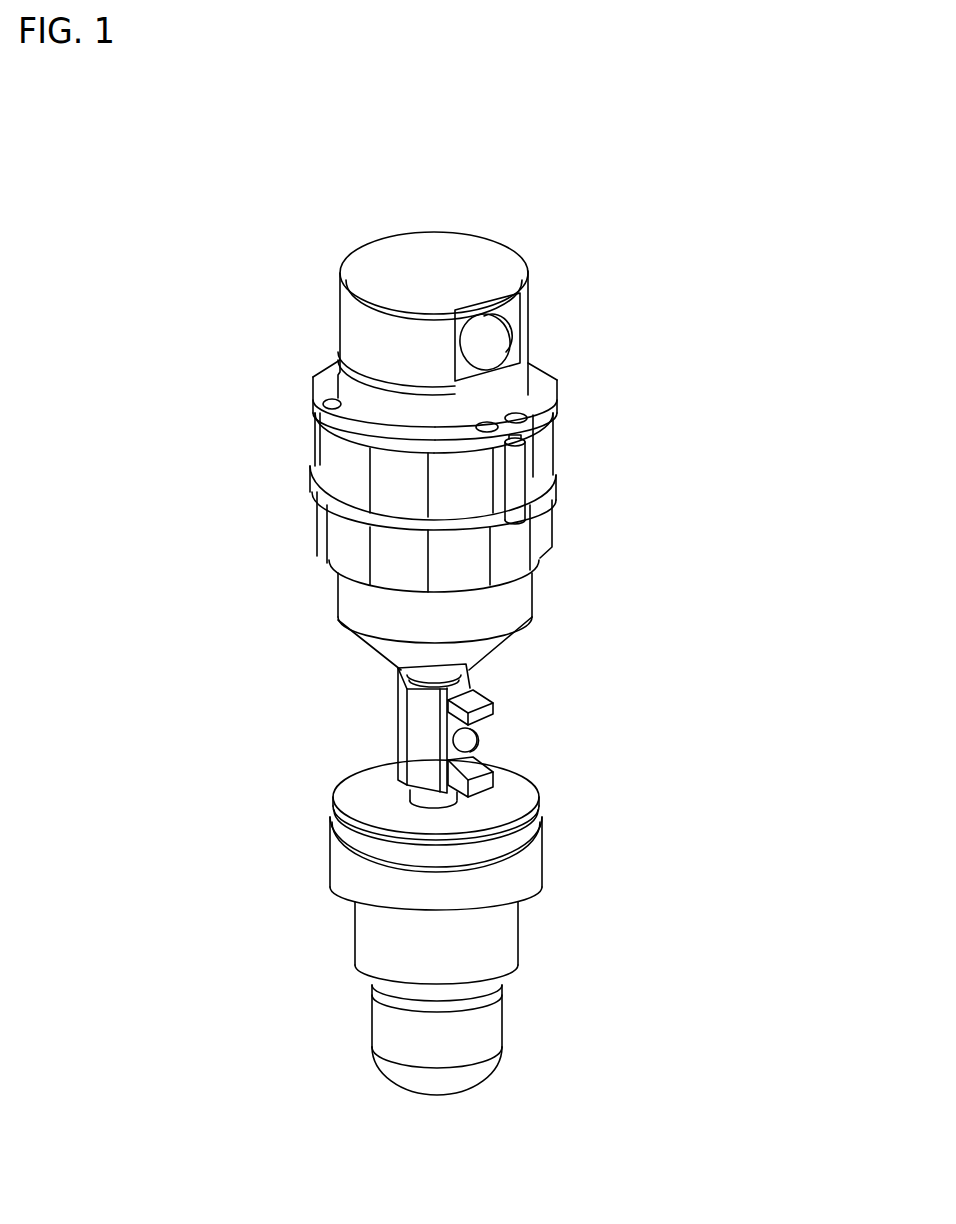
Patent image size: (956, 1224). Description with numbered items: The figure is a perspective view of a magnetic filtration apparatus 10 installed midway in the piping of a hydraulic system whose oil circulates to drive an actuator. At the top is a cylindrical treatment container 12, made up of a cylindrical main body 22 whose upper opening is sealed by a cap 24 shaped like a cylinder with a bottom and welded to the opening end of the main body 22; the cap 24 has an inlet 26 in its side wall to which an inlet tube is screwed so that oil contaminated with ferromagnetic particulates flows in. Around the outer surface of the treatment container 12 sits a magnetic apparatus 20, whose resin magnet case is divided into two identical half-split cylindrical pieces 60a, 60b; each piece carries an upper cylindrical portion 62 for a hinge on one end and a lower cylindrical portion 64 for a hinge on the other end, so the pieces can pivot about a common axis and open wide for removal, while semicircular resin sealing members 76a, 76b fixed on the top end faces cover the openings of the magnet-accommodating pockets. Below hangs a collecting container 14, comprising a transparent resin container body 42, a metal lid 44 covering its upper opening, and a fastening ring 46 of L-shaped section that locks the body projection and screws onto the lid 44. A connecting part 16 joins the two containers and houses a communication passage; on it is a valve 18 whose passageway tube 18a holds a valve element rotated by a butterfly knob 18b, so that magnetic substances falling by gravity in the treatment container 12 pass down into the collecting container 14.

The magnetic filtration apparatus 10 is at (572, 202).
The treatment container 12 is at (332, 588).
The collecting container 14 is at (530, 930).
The connecting part 16 is at (405, 797).
The valve 18 is at (510, 712).
The passageway tube 18a is at (418, 725).
The butterfly knob 18b is at (483, 712).
The magnetic apparatus 20 is at (568, 432).
The main body 22 is at (500, 610).
The cap 24 is at (397, 262).
The inlet 26 is at (507, 333).
The container body 42 is at (378, 933).
The lid 44 is at (503, 803).
The fastening ring 46 is at (527, 868).
The half-split cylindrical piece 60a is at (343, 462).
The half-split cylindrical piece 60b is at (530, 463).
The upper cylindrical portion for a hinge 62 is at (517, 482).
The lower cylindrical portion for a hinge 64 is at (517, 552).
The sealing member 76a is at (328, 380).
The sealing member 76b is at (543, 390).